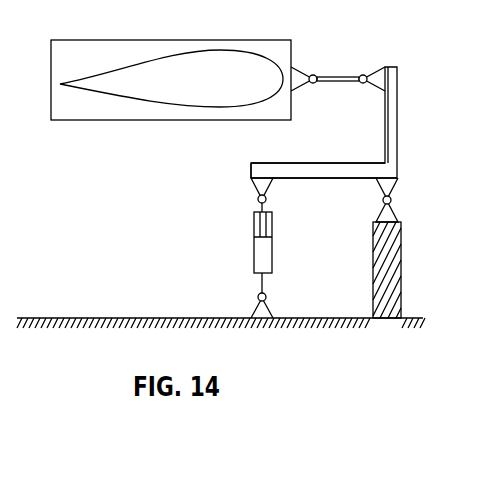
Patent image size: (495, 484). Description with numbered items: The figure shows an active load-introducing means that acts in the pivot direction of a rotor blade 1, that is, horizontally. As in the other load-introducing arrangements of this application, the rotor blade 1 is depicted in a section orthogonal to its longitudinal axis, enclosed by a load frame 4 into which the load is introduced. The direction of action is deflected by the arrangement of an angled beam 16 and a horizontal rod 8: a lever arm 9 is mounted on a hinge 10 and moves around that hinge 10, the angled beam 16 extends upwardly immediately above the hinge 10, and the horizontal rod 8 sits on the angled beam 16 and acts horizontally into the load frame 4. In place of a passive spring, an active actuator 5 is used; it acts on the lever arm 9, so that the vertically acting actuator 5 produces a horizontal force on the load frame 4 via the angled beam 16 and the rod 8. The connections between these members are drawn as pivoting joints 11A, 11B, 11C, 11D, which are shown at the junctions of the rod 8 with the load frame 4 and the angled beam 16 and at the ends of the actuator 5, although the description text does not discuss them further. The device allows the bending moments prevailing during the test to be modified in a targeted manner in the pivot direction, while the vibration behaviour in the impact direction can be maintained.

The rotor blade 1 is at (236, 52).
The load frame 4 is at (51, 70).
The active actuator 5 is at (273, 250).
The horizontal rod 8 is at (338, 83).
The lever arm 9 is at (310, 163).
The hinge 10 is at (383, 200).
The hinge joint 11A is at (360, 75).
The hinge joint 11B is at (312, 83).
The hinge joint 11C is at (254, 213).
The hinge joint 11D is at (266, 299).
The angled beam 16 is at (398, 142).